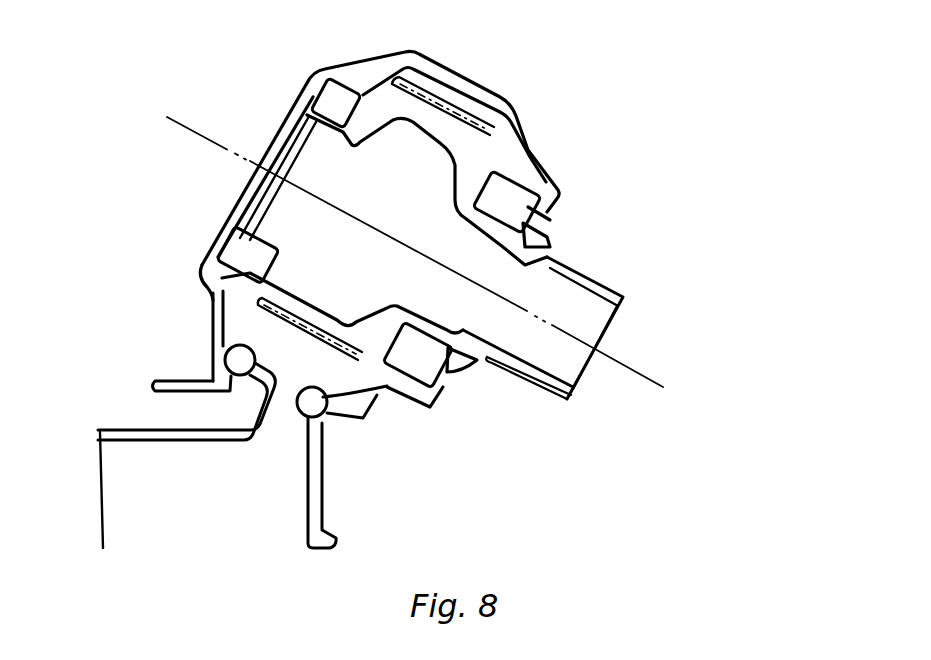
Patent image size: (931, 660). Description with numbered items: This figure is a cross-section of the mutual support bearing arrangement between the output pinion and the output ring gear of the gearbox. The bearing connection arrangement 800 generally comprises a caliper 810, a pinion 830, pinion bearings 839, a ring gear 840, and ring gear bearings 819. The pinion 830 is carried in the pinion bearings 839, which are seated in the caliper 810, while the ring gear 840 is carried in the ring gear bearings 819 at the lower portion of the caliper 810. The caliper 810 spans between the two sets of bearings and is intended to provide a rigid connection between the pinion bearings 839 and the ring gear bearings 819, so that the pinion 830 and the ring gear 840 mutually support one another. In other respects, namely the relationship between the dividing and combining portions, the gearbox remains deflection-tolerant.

The bearing connection arrangement 800 is at (444, 203).
The caliper 810 is at (488, 97).
The ring gear bearings 819 is at (225, 352).
The pinion 830 is at (477, 160).
The pinion bearings 839 is at (347, 72).
The ring gear 840 is at (273, 432).